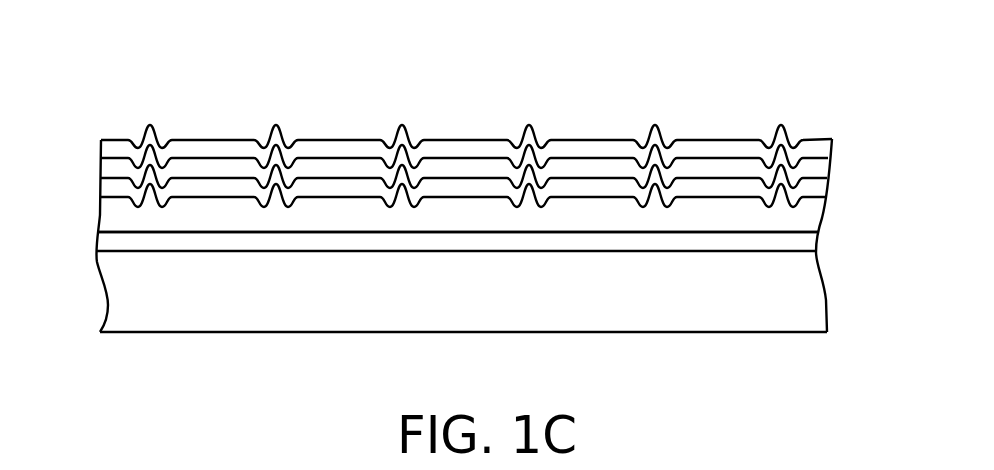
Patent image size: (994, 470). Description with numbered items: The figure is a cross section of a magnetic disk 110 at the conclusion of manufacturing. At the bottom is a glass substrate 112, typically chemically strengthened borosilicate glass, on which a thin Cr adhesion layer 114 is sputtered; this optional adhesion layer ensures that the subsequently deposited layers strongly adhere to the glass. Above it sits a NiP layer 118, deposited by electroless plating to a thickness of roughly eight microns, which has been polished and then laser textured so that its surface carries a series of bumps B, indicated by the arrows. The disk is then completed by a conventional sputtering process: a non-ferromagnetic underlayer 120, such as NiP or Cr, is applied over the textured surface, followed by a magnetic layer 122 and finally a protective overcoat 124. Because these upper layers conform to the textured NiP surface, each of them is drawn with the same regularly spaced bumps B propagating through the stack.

The disk 110 is at (798, 108).
The glass substrate 112 is at (777, 307).
The Cr adhesion layer 114 is at (623, 242).
The NiP layer 118 is at (588, 213).
The underlayer 120 is at (309, 188).
The magnetic layer 122 is at (331, 170).
The protective overcoat 124 is at (370, 148).
The bumps B is at (278, 206).